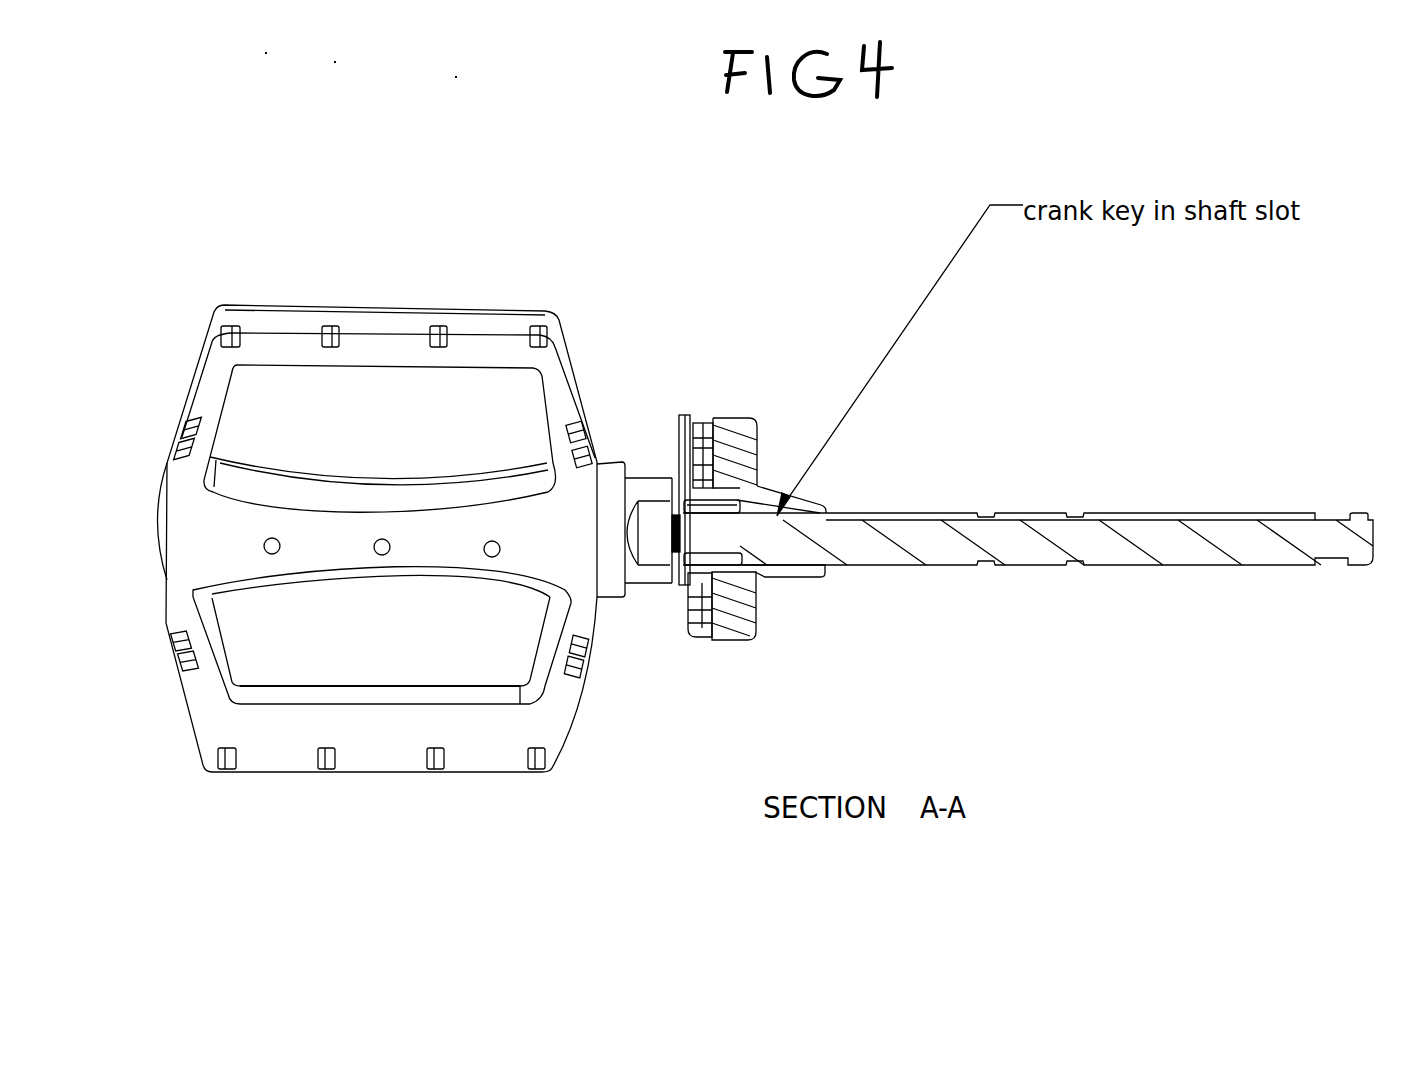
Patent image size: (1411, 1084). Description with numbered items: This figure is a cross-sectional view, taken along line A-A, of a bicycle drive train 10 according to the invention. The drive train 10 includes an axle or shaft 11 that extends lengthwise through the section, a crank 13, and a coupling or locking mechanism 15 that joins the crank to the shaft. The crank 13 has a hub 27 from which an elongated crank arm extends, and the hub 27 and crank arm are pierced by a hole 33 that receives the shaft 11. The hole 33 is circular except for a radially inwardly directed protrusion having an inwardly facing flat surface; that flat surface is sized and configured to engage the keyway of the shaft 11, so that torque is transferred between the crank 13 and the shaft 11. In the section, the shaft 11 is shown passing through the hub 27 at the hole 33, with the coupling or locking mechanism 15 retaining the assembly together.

The drive train 10 is at (808, 266).
The shaft 11 is at (1040, 587).
The crank 13 is at (735, 448).
The coupling or locking mechanism 15 is at (697, 640).
The hub 27 is at (806, 502).
The hole 33 is at (805, 517).